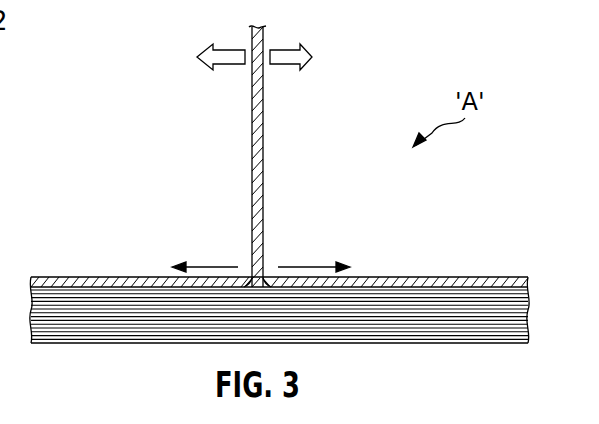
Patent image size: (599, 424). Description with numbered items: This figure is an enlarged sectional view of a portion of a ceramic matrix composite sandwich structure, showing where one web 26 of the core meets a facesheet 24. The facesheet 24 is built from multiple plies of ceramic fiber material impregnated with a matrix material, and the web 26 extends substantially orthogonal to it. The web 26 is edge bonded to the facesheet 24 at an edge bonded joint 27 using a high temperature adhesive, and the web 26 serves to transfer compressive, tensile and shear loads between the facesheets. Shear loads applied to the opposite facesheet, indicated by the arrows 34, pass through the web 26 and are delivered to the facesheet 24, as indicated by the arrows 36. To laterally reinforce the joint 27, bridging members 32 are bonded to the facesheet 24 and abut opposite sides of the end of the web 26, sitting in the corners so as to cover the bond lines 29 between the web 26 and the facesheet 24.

The facesheet 24 is at (67, 313).
The web 26 is at (252, 146).
The edge bonded joint 27 is at (250, 287).
The bond line 29 is at (268, 287).
The bridging member 32 is at (83, 282).
The arrows indicating shear loads 34 is at (197, 56).
The arrows indicating transmitted loads 36 is at (210, 264).